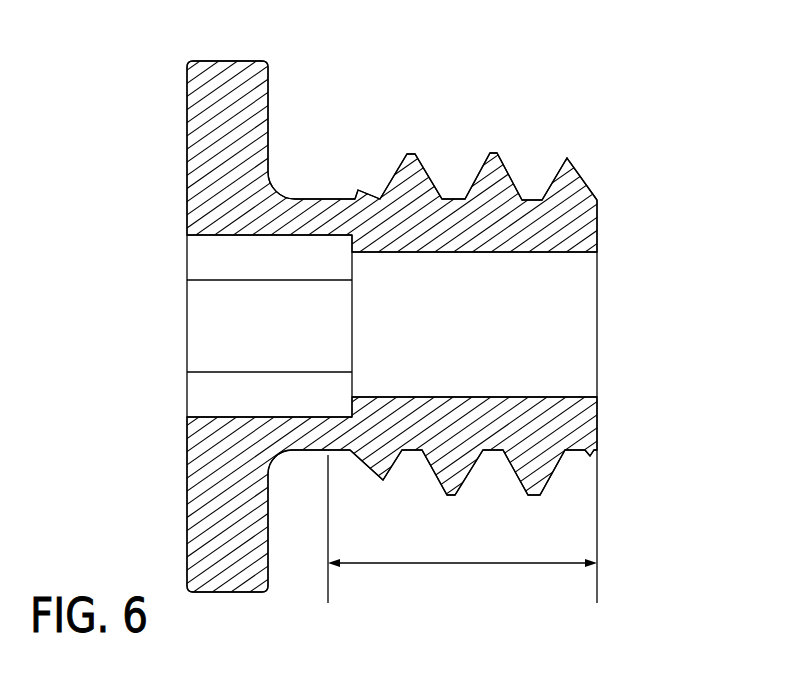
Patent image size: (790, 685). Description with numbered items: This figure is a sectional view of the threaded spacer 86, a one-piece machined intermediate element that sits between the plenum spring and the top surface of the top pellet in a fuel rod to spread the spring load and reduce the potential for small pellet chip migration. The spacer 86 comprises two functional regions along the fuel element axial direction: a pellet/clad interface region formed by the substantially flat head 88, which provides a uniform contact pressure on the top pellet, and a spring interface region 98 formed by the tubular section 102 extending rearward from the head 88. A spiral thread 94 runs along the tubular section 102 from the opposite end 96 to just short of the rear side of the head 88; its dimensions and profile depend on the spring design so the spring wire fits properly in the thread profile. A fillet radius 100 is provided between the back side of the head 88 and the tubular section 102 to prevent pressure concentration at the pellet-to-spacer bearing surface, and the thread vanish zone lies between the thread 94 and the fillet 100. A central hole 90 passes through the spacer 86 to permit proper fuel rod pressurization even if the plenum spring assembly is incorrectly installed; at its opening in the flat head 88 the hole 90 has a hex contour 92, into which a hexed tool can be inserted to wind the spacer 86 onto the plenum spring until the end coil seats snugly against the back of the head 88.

The threaded spacer 86 is at (433, 128).
The flat head 88 is at (187, 148).
The central hole 90 is at (187, 352).
The hex contour 92 is at (176, 299).
The spiral thread 94 is at (511, 172).
The opposite end 96 is at (597, 215).
The spring interface region 98 is at (448, 564).
The fillet radius 100 is at (282, 196).
The tubular section 102 is at (590, 452).